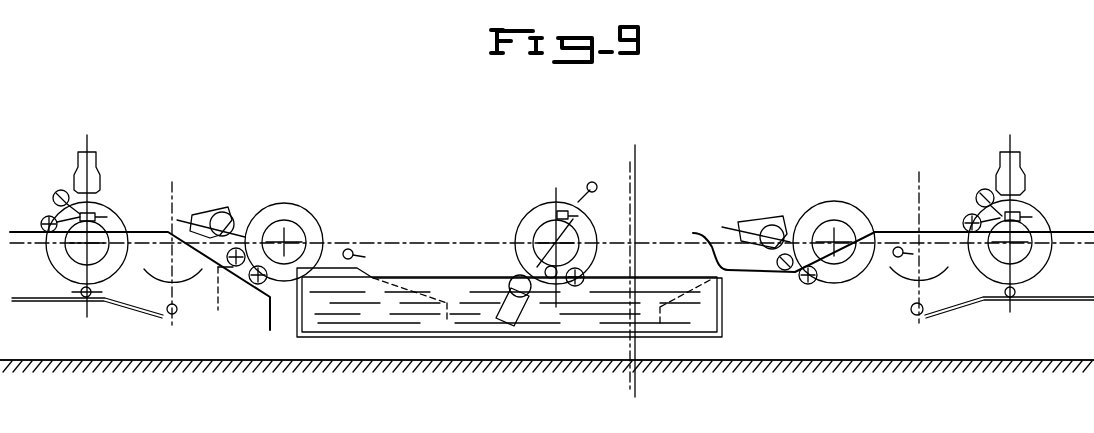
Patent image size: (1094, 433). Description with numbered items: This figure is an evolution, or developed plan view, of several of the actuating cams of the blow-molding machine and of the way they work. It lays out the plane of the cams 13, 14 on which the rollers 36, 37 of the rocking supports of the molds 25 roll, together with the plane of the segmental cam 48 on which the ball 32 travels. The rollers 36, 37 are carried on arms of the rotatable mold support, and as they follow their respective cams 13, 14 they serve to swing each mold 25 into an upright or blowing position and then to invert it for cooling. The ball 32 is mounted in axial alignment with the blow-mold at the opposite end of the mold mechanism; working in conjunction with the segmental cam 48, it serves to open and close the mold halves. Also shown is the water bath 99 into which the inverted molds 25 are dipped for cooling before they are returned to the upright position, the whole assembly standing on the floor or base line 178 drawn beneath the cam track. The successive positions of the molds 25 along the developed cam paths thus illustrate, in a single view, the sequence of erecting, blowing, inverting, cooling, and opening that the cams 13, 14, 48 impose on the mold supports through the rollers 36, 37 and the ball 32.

The cam 13 is at (333, 250).
The cam 14 is at (137, 230).
The mold 25 is at (100, 175).
The ball 32 is at (102, 292).
The roller 36 is at (60, 191).
The roller 37 is at (43, 218).
The segmental cam 48 is at (52, 302).
The water bath 99 is at (462, 337).
The floor 178 is at (840, 362).